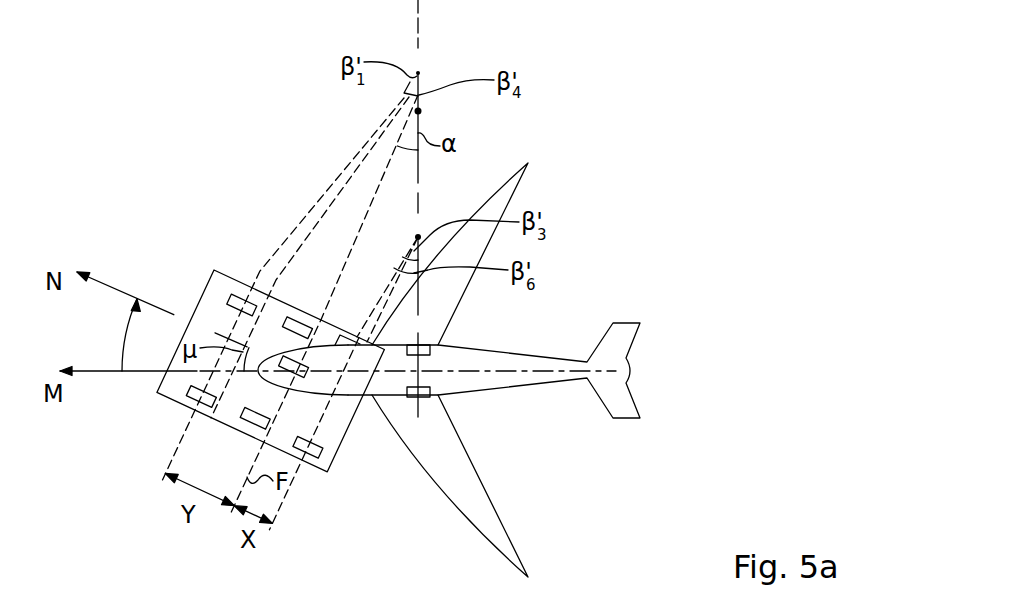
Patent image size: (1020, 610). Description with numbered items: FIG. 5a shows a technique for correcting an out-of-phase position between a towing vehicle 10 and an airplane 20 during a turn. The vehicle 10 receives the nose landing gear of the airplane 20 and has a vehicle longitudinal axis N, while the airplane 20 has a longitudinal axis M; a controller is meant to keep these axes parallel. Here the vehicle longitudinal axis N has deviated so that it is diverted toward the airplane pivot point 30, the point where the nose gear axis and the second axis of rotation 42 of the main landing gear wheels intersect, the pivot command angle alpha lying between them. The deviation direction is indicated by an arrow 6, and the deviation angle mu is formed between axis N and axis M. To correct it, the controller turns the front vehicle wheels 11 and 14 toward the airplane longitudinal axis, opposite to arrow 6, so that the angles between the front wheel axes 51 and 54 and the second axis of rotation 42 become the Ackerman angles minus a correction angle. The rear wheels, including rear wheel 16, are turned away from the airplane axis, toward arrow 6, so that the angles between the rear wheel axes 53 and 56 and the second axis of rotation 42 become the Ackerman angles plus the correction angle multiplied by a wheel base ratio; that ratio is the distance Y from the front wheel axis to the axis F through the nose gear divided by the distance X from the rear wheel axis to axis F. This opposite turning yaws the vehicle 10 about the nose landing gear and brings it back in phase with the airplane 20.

The arrow 6 is at (122, 348).
The vehicle 10 is at (243, 430).
The front vehicle wheel 11 is at (233, 300).
The front vehicle wheel 14 is at (194, 402).
The rear vehicle wheel 16 is at (314, 458).
The airplane 20 is at (488, 395).
The airplane pivot point 30 is at (420, 111).
The second axis of rotation 42 is at (420, 210).
The front wheel axis 51 is at (280, 252).
The rear wheel axis 53 is at (385, 286).
The front wheel axis 54 is at (298, 252).
The rear wheel axis 56 is at (328, 407).